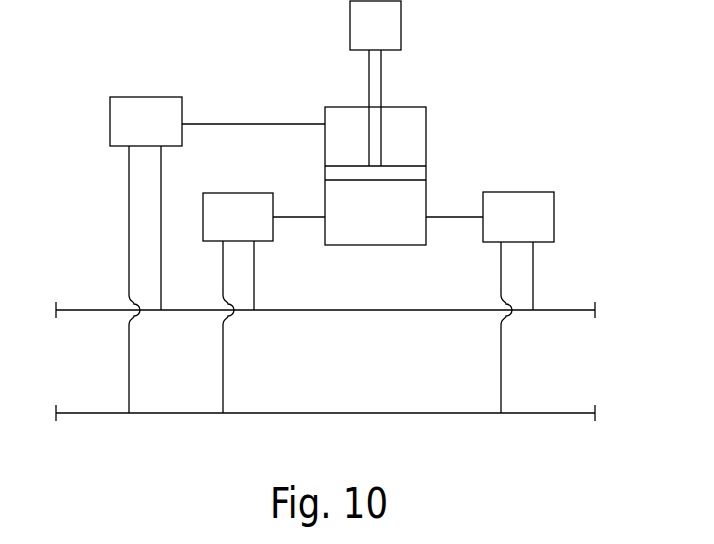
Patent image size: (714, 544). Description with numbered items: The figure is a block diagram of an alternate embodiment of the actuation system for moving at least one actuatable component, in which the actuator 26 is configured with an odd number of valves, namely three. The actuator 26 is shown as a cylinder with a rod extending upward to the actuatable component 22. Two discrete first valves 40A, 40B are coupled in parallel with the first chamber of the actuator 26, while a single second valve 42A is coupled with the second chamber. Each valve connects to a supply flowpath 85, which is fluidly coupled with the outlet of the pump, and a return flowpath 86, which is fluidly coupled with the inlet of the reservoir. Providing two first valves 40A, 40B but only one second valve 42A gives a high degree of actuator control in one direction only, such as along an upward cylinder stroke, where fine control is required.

The engine 22 is at (389, 35).
The actuator 26 is at (428, 106).
The first valve 40A is at (258, 227).
The first valve 40B is at (538, 227).
The second valve 42A is at (168, 133).
The flowpath 85 is at (340, 311).
The flowpath 86 is at (356, 414).